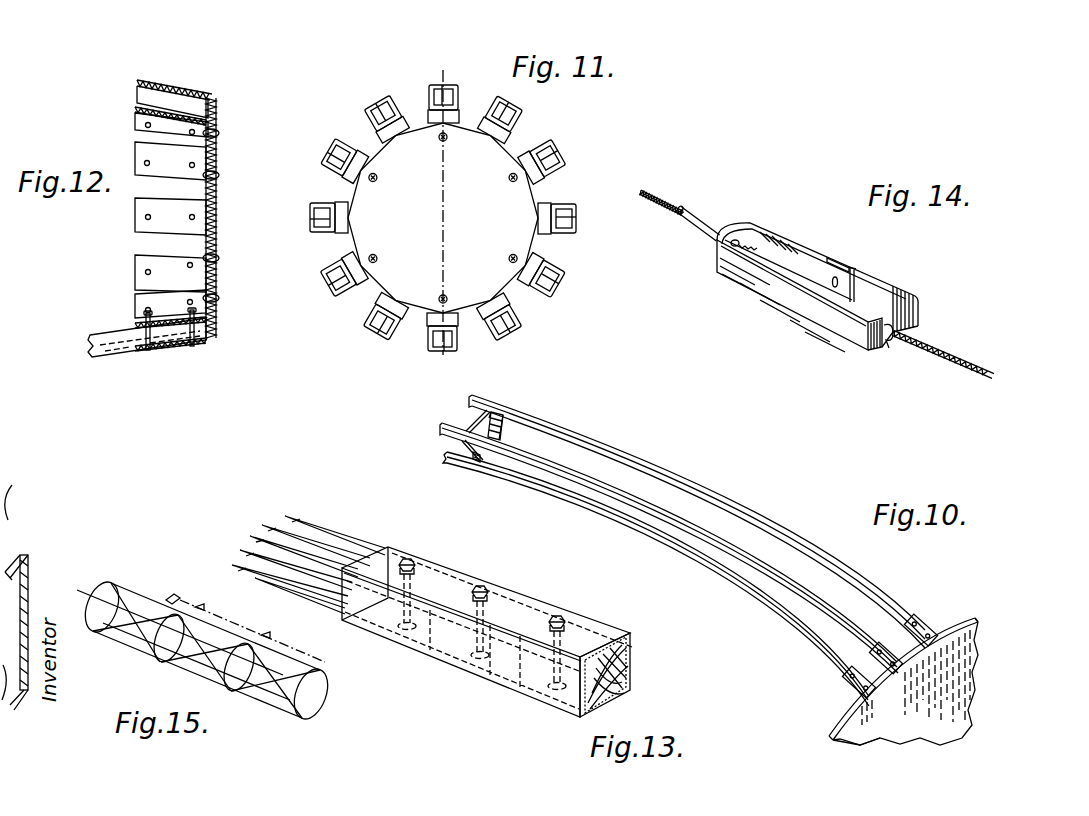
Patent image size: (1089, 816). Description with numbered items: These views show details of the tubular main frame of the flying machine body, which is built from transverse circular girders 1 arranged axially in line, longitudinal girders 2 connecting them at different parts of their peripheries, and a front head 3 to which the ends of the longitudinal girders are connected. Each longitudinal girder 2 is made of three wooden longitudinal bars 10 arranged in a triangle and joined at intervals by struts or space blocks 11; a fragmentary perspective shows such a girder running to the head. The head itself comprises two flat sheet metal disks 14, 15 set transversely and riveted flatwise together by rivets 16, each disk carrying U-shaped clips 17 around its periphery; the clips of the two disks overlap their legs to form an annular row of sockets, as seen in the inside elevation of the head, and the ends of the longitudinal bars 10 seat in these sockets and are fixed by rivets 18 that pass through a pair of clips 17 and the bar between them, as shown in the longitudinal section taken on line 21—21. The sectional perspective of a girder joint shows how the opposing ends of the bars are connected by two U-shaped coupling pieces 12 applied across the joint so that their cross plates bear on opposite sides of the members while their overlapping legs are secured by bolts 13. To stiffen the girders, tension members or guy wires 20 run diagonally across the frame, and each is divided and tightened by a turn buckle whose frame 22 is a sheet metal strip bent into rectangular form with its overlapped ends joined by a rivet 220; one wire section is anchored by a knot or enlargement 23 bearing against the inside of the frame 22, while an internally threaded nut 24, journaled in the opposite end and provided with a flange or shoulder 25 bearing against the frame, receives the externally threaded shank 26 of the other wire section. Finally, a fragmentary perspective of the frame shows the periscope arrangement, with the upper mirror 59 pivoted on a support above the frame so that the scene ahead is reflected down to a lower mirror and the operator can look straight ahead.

In FIG. 15, the transverse circular girder 1 is at (327, 686).
In FIG. 15, the longitudinal girder 2 is at (327, 710).
In FIG. 12, the front head 3 is at (219, 217).
In FIG. 11, the front head 3 is at (443, 218).
In FIG. 10, the front head 3 is at (905, 694).
In FIG. 12, the longitudinal bar 10 is at (117, 352).
In FIG. 10, the longitudinal bar 10 is at (733, 519).
In FIG. 13, the longitudinal bar 10 is at (282, 523).
In FIG. 10, the strut or space block 11 is at (504, 433).
In FIG. 13, the U-shaped coupling piece 12 is at (577, 697).
In FIG. 13, the bolt 13 is at (412, 559).
In FIG. 12, the sheet metal disk 14 is at (214, 283).
In FIG. 10, the sheet metal disk 14 is at (887, 733).
In FIG. 12, the sheet metal disk 15 is at (205, 242).
In FIG. 11, the sheet metal disk 15 is at (422, 212).
In FIG. 10, the sheet metal disk 15 is at (840, 724).
In FIG. 12, the rivet 16 is at (220, 175).
In FIG. 11, the rivet 16 is at (512, 255).
In FIG. 12, the U-shaped clip 17 is at (137, 82).
In FIG. 11, the U-shaped clip 17 is at (342, 150).
In FIG. 10, the U-shaped clip 17 is at (947, 624).
In FIG. 12, the rivet 18 is at (193, 346).
In FIG. 10, the rivet 18 is at (916, 620).
In FIG. 14, the tension member or guy wire 20 is at (950, 357).
In FIG. 11, the section line 21 is at (445, 84).
In FIG. 14, the turn buckle frame 22 is at (845, 339).
In FIG. 14, the knot or enlargement 23 is at (887, 340).
In FIG. 14, the internally screw threaded nut 24 is at (707, 226).
In FIG. 14, the flange or shoulder 25 is at (750, 234).
In FIG. 14, the externally screw threaded shank 26 is at (670, 211).
In FIG. 15, the upper mirror 59 is at (185, 584).
In FIG. 14, the rivet 220 is at (856, 272).